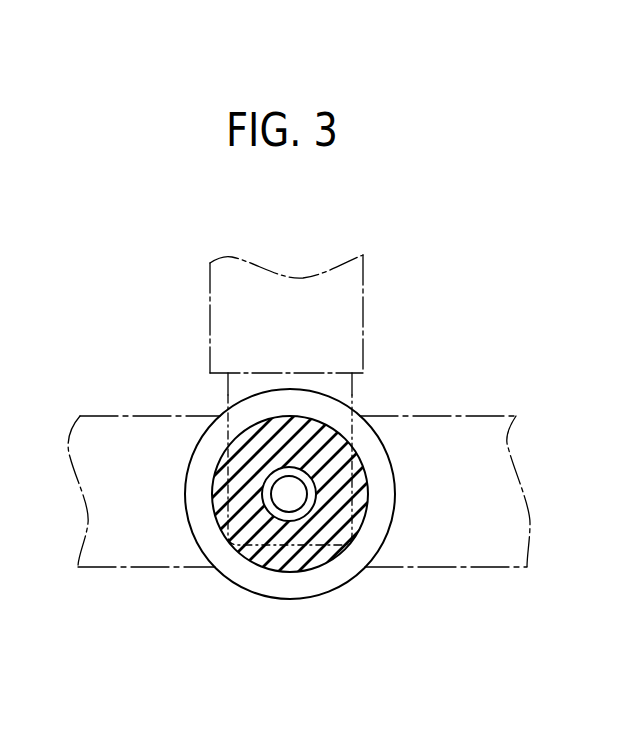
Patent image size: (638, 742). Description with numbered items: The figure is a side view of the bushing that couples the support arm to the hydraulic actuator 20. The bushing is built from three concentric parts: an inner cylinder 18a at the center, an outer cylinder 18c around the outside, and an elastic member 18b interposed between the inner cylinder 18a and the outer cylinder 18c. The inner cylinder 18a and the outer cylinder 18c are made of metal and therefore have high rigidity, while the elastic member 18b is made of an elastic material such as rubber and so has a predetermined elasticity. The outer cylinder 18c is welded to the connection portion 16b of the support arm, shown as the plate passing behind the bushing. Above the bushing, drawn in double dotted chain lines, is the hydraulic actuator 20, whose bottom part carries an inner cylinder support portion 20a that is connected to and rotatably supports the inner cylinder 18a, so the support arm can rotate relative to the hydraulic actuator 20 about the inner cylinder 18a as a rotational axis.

The connection portion 16b is at (460, 540).
The hydraulic actuator 20 is at (357, 295).
The inner cylinder support portion 20a is at (237, 388).
The outer cylinder 18c is at (366, 438).
The elastic member 18b is at (287, 560).
The inner cylinder 18a is at (282, 517).